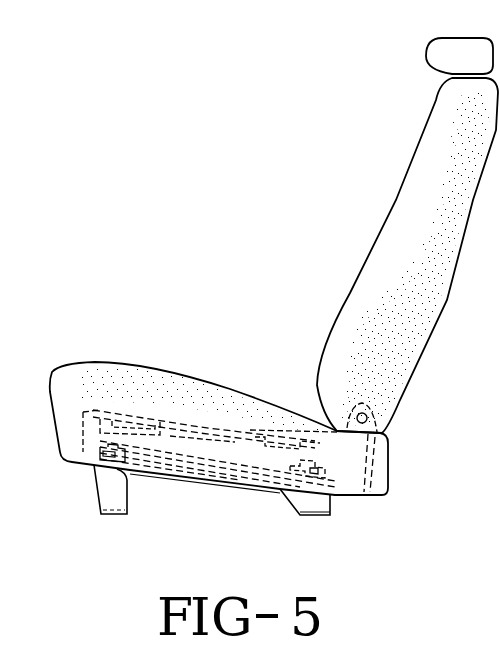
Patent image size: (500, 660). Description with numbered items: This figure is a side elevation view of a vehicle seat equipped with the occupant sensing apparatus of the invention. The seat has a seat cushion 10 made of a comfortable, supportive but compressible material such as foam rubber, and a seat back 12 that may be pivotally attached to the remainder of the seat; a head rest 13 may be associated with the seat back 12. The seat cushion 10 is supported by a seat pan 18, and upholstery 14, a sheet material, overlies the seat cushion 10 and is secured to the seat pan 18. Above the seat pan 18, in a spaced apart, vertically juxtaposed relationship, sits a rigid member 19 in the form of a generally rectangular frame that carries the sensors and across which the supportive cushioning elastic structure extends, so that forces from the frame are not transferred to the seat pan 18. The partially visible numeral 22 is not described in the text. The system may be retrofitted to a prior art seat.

The seat cushion 10 is at (7, 343).
The seat back 12 is at (428, 177).
The head rest 13 is at (448, 47).
The upholstery 14 is at (221, 392).
The seat pan 18 is at (78, 434).
The rigid member 19 is at (95, 412).
The seat frame 22 is at (6, 143).